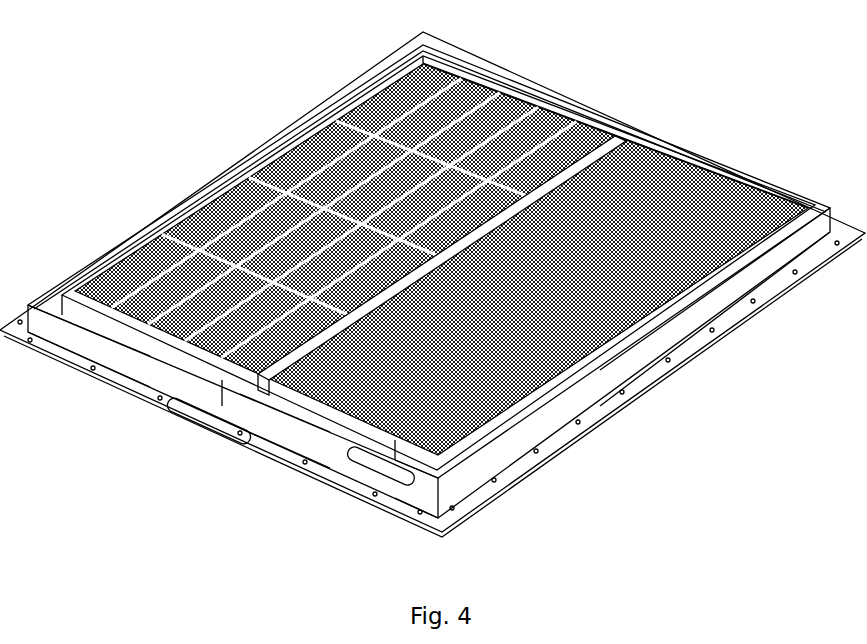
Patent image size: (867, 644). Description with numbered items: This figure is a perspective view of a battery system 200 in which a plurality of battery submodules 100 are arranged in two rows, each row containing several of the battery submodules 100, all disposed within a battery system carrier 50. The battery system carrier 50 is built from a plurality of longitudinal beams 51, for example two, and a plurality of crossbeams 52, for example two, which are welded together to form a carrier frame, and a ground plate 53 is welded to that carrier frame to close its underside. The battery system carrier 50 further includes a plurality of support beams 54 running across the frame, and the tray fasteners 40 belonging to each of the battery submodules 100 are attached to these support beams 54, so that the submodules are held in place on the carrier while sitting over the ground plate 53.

The battery system 200 is at (432, 294).
The battery submodule 100 is at (88, 270).
The battery system carrier 50 is at (432, 294).
The longitudinal beam 51 is at (680, 330).
The crossbeam 52 is at (252, 412).
The ground plate 53 is at (122, 378).
The support beam 54 is at (405, 452).
The tray fastener 40 is at (167, 418).